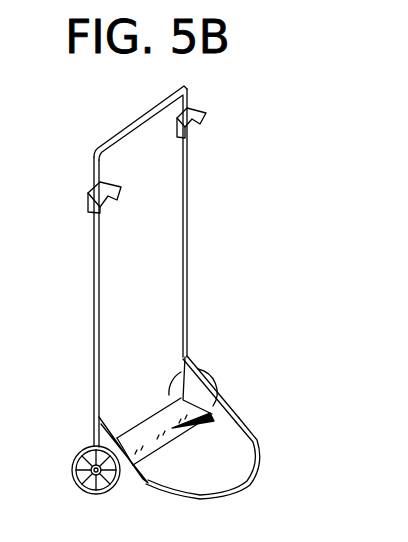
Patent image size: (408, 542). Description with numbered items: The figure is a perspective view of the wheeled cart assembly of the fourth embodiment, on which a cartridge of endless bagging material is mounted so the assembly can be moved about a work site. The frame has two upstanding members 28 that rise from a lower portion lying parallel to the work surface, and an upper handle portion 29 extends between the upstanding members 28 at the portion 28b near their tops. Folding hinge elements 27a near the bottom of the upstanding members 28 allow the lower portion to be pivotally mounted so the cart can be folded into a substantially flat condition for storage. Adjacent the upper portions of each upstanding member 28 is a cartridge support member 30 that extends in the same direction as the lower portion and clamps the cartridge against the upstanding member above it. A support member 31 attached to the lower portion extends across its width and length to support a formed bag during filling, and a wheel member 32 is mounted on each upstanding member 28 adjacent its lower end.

The folding hinge elements 27a is at (110, 422).
The upstanding members 28 is at (94, 299).
The portion of upstanding members 28b is at (93, 163).
The upper handle portion 29 is at (143, 115).
The cartridge support member 30 is at (206, 112).
The support member 31 is at (254, 436).
The wheel member 32 is at (72, 470).